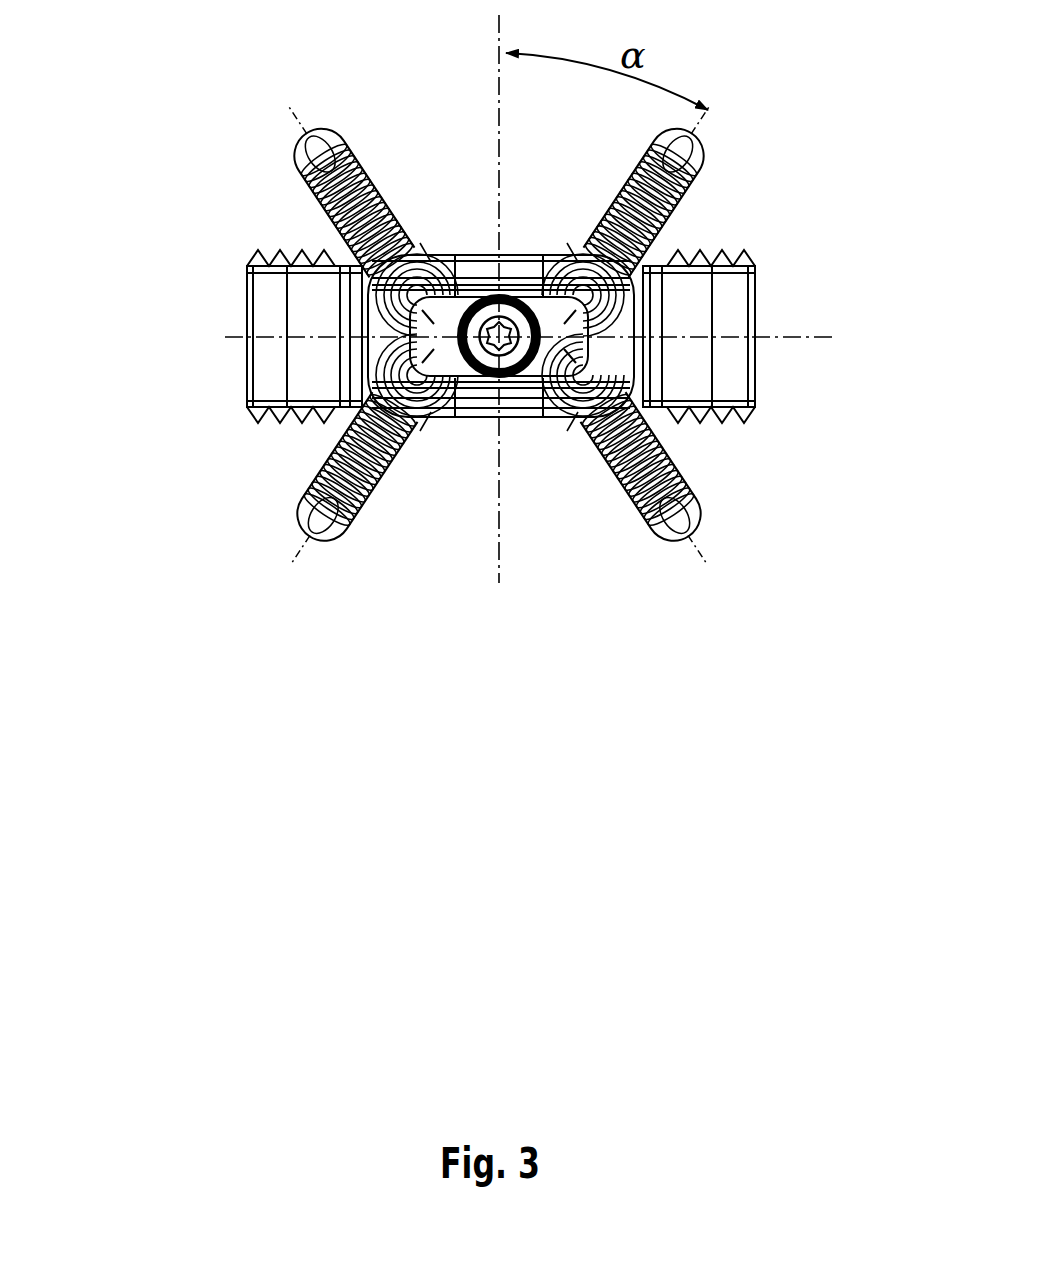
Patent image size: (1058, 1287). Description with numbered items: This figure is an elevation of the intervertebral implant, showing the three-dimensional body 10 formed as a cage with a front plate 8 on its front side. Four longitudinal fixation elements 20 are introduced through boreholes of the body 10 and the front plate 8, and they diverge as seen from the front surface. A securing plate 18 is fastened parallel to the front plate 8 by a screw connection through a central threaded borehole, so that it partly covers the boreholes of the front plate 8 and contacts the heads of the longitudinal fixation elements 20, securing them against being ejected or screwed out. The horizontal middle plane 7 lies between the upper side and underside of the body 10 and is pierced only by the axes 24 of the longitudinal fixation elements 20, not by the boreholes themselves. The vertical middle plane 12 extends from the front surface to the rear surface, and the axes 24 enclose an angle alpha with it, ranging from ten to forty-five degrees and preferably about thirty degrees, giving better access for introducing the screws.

The horizontal middle plane 7 is at (800, 337).
The front plate 8 is at (520, 397).
The three-dimensional body 10 is at (237, 308).
The vertical middle plane 12 is at (498, 143).
The securing plate 18 is at (455, 367).
The longitudinal fixation elements 20 is at (300, 187).
The axes 24 is at (292, 108).